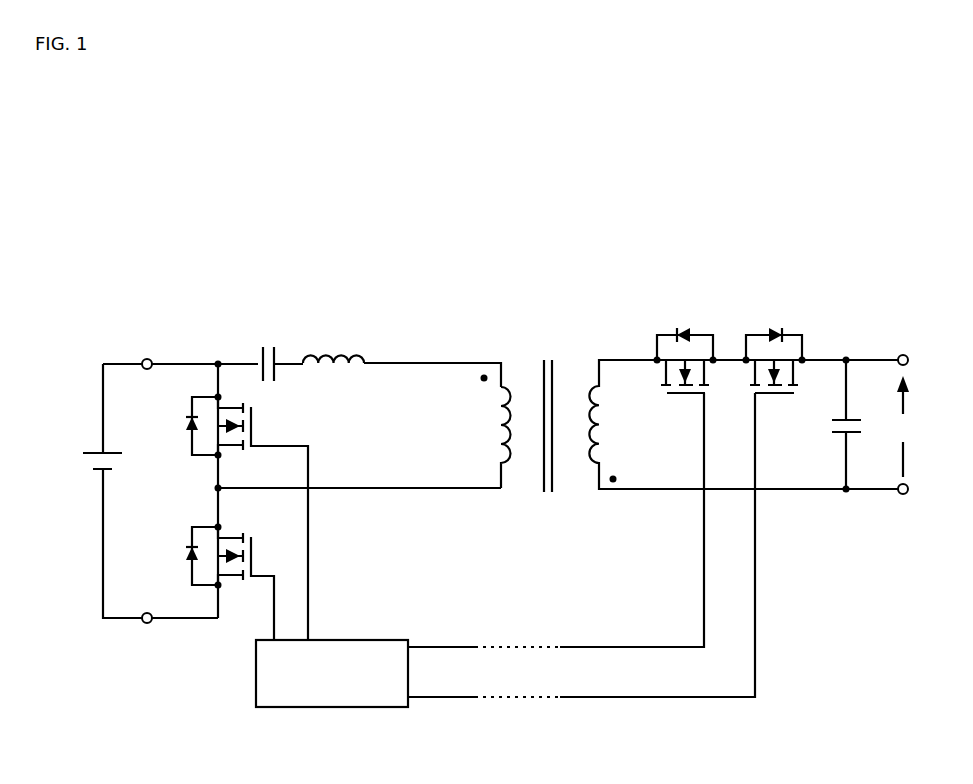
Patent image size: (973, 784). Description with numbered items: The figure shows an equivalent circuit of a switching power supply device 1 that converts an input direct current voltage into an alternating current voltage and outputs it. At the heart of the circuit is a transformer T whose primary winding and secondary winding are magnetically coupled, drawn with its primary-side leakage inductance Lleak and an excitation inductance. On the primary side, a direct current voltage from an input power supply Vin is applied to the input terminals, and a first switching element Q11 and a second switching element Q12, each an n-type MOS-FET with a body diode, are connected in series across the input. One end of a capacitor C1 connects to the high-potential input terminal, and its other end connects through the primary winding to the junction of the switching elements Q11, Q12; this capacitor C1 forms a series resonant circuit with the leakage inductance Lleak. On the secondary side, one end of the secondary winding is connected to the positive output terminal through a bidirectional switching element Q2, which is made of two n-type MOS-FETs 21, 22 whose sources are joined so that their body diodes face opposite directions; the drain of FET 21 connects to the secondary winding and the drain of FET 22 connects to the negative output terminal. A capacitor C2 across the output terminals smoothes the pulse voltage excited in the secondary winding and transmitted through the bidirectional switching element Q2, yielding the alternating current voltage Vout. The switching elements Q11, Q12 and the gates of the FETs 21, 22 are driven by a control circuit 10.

The switching power supply device 1 is at (117, 272).
The control circuit 10 is at (400, 707).
The n-type MOS-FET 21 is at (704, 309).
The n-type MOS-FET 22 is at (762, 309).
The bidirectional switching element Q2 is at (803, 259).
The first switching element Q11 is at (178, 567).
The second switching element Q12 is at (185, 468).
The capacitor C1 is at (279, 351).
The capacitor C2 is at (838, 425).
The transformer T is at (681, 427).
The leakage inductance Lleak is at (333, 343).
The input power supply Vin is at (91, 451).
The alternating current voltage Vout is at (900, 426).